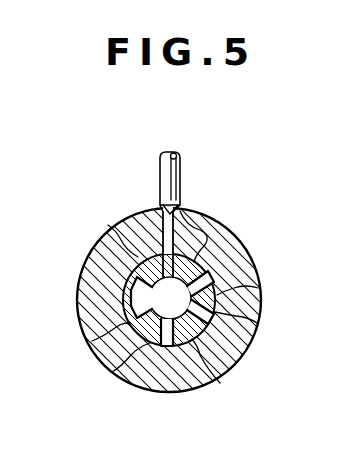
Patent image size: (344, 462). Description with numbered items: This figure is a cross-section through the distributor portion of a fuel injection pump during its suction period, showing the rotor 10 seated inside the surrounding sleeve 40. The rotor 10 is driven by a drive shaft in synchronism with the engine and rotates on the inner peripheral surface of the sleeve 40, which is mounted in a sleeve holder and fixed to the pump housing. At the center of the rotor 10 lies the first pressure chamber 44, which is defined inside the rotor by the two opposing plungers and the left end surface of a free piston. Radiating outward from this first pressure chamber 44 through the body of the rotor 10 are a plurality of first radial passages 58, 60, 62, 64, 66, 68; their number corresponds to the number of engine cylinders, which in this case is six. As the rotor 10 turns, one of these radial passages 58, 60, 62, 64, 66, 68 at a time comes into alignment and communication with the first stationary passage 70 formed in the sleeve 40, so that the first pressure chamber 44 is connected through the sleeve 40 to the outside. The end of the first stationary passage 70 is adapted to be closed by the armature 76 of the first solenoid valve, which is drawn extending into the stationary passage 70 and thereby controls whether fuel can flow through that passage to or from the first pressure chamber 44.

The rotor 10 is at (78, 295).
The sleeve 40 is at (92, 270).
The first pressure chamber 44 is at (112, 372).
The first radial passage 58 is at (210, 238).
The first radial passage 60 is at (258, 288).
The first radial passage 62 is at (257, 323).
The first radial passage 64 is at (220, 383).
The first radial passage 66 is at (92, 341).
The first radial passage 68 is at (108, 225).
The first stationary passage 70 is at (175, 228).
The armature 76 is at (182, 162).